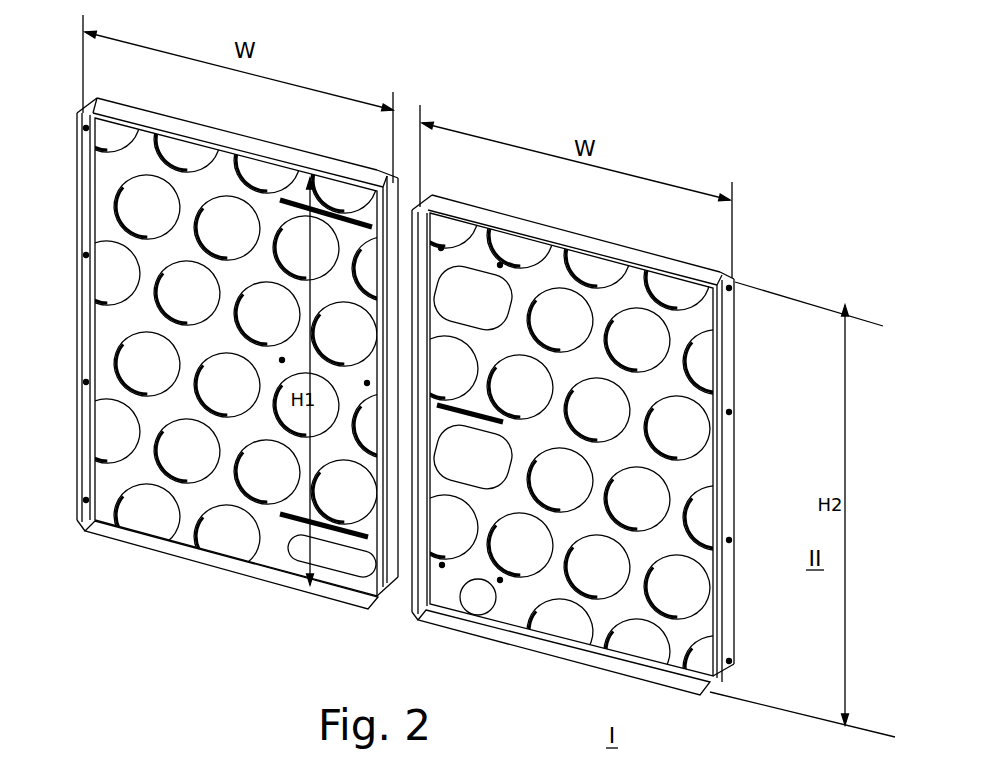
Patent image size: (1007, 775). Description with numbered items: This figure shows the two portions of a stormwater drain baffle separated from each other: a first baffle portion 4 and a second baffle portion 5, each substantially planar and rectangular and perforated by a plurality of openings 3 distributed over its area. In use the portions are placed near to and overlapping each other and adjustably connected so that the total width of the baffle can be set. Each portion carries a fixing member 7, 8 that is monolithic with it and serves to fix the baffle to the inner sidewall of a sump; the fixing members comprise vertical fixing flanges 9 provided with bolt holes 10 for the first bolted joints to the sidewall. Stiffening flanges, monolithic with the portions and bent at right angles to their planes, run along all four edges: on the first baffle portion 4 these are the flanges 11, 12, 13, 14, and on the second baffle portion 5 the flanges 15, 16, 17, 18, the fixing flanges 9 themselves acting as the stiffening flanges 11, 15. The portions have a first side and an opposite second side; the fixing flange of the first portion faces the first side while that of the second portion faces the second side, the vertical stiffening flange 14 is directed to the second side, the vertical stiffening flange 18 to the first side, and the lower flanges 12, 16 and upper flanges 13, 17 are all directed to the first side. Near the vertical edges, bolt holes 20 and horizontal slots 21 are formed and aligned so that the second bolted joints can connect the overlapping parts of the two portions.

The openings 3 is at (235, 392).
The first baffle portion 4 is at (203, 557).
The second baffle portion 5 is at (535, 640).
The fixing member 7 is at (78, 328).
The fixing member 8 is at (735, 458).
The fixing flange 9 is at (82, 215).
The bolt holes 10 is at (84, 128).
The stiffening flange 11 is at (88, 425).
The stiffening flange 12 is at (152, 540).
The stiffening flange 13 is at (147, 118).
The stiffening flange 14 is at (407, 188).
The stiffening flange 15 is at (735, 590).
The stiffening flange 16 is at (585, 663).
The stiffening flange 17 is at (610, 247).
The stiffening flange 18 is at (433, 220).
The bolt holes 20 is at (282, 360).
The horizontal slots 21 is at (330, 221).